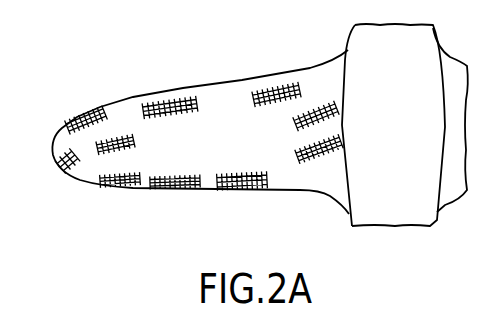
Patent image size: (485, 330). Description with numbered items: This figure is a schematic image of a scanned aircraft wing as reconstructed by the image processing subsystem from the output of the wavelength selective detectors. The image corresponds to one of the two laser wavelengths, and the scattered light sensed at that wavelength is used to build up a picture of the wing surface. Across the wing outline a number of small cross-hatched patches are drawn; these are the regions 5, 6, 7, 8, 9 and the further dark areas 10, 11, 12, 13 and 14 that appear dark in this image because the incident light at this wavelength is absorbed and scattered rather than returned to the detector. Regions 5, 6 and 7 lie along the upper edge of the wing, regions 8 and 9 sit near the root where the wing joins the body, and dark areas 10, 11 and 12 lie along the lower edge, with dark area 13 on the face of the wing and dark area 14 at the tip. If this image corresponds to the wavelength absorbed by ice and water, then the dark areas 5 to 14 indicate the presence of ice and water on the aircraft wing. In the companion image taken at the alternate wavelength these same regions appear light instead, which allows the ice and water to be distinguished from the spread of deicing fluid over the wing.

The dark region 5 is at (85, 118).
The dark region 6 is at (170, 108).
The dark region 7 is at (284, 92).
The dark region 8 is at (297, 124).
The dark region 9 is at (297, 158).
The dark area 10 is at (247, 183).
The dark area 11 is at (177, 188).
The dark area 12 is at (117, 188).
The dark area 13 is at (102, 147).
The dark area 14 is at (67, 170).